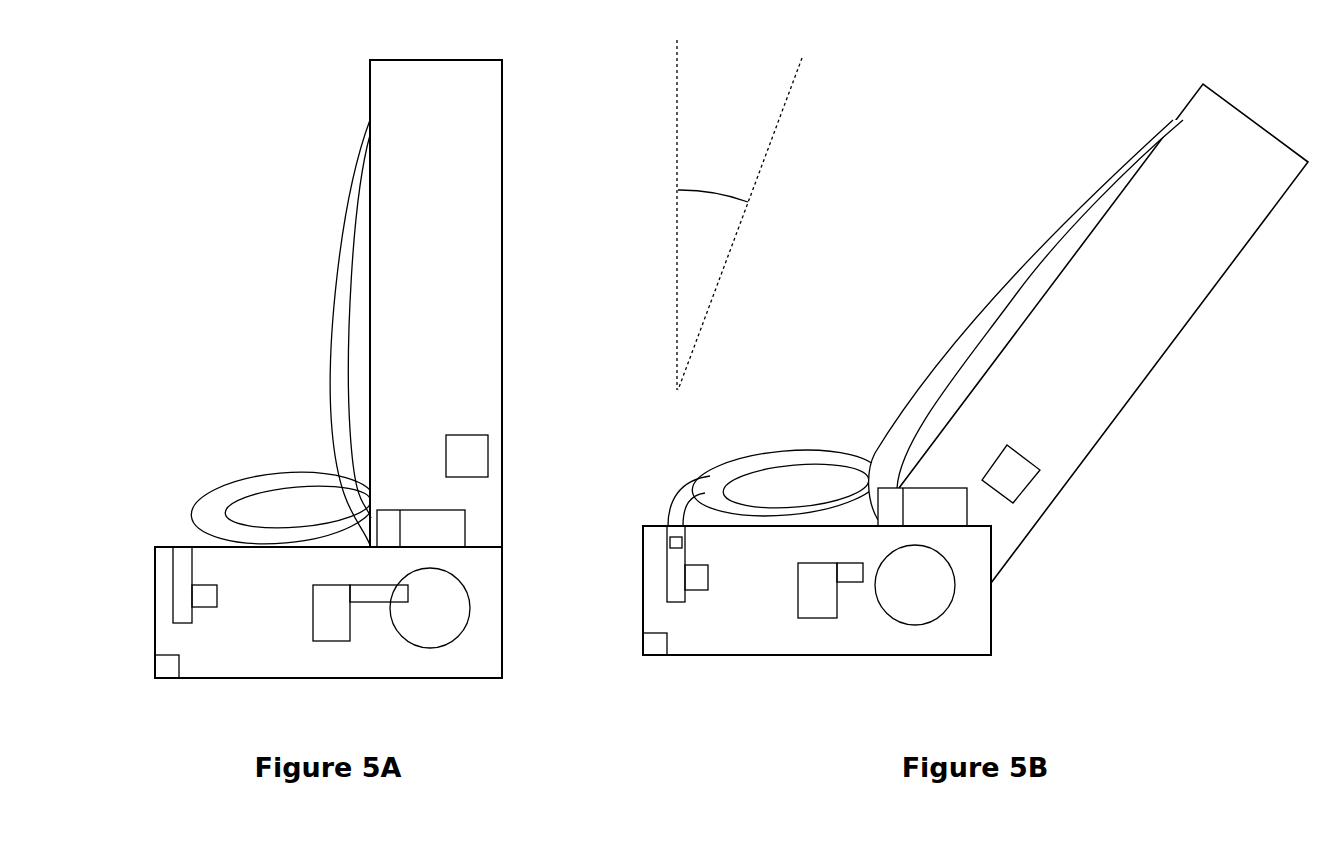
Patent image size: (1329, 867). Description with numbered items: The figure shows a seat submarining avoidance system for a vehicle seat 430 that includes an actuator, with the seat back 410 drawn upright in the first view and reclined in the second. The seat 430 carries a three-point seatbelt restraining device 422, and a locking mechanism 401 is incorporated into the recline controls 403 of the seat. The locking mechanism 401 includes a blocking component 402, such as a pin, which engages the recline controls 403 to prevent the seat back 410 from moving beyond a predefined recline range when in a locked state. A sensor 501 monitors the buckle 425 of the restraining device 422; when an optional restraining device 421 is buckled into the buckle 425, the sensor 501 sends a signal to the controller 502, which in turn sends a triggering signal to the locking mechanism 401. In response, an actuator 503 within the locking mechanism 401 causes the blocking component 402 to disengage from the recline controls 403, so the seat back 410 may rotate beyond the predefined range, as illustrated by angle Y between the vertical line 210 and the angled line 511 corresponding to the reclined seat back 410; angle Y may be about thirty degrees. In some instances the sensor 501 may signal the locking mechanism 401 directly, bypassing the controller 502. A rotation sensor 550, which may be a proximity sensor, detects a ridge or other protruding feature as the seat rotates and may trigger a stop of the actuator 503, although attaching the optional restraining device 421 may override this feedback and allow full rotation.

In FIG. 5B, the vertical line 210 is at (680, 42).
In FIG. 5B, the angled line 511 is at (785, 113).
In FIG. 5B, the angle Y is at (678, 190).
In FIG. 5A, the locking mechanism 401 is at (310, 573).
In FIG. 5B, the locking mechanism 401 is at (778, 552).
In FIG. 5A, the blocking component 402 is at (380, 585).
In FIG. 5B, the blocking component 402 is at (848, 563).
In FIG. 5A, the recline controls 403 is at (430, 648).
In FIG. 5B, the recline controls 403 is at (900, 627).
In FIG. 5A, the seat back 410 is at (458, 365).
In FIG. 5B, the seat back 410 is at (1093, 390).
In FIG. 5B, the optional restraining device 421 is at (673, 502).
In FIG. 5A, the restraining device 422 is at (335, 348).
In FIG. 5B, the restraining device 422 is at (958, 337).
In FIG. 5A, the buckle 425 is at (182, 575).
In FIG. 5B, the buckle 425 is at (675, 575).
In FIG. 5A, the seat 430 is at (472, 668).
In FIG. 5B, the seat 430 is at (978, 640).
In FIG. 5A, the sensor 501 is at (203, 610).
In FIG. 5B, the sensor 501 is at (695, 590).
In FIG. 5A, the controller 502 is at (165, 682).
In FIG. 5B, the controller 502 is at (653, 660).
In FIG. 5A, the actuator 503 is at (312, 607).
In FIG. 5B, the actuator 503 is at (797, 597).
In FIG. 5A, the rotation sensor 550 is at (490, 455).
In FIG. 5B, the rotation sensor 550 is at (1040, 470).